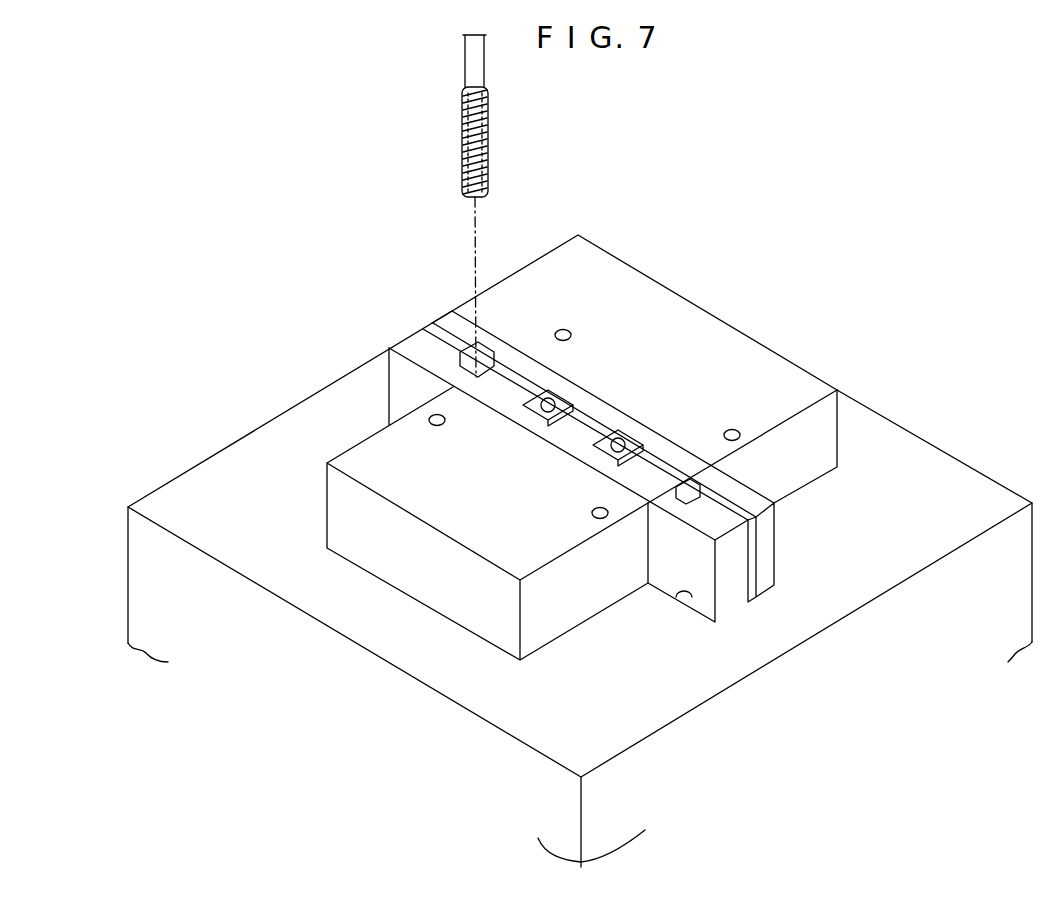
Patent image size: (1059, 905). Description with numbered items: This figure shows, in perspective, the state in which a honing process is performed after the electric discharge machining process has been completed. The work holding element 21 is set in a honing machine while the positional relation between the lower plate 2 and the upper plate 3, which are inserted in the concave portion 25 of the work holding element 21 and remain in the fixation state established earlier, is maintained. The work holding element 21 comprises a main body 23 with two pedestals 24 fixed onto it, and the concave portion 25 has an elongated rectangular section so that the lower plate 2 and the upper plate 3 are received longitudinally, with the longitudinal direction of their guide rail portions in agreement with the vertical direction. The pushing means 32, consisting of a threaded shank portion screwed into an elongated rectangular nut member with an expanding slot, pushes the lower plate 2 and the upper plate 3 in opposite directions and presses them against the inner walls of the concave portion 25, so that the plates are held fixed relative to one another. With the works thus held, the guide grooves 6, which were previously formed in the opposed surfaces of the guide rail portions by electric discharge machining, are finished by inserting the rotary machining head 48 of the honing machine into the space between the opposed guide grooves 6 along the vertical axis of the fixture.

The lower plate 2 is at (451, 318).
The upper plate 3 is at (397, 343).
The guide groove 6 is at (410, 348).
The work holding element 21 is at (135, 576).
The main body 23 is at (142, 652).
The pedestal 24 is at (740, 338).
The concave portion 25 is at (689, 600).
The pushing means 32 is at (578, 396).
The rotary machining head 48 is at (462, 150).